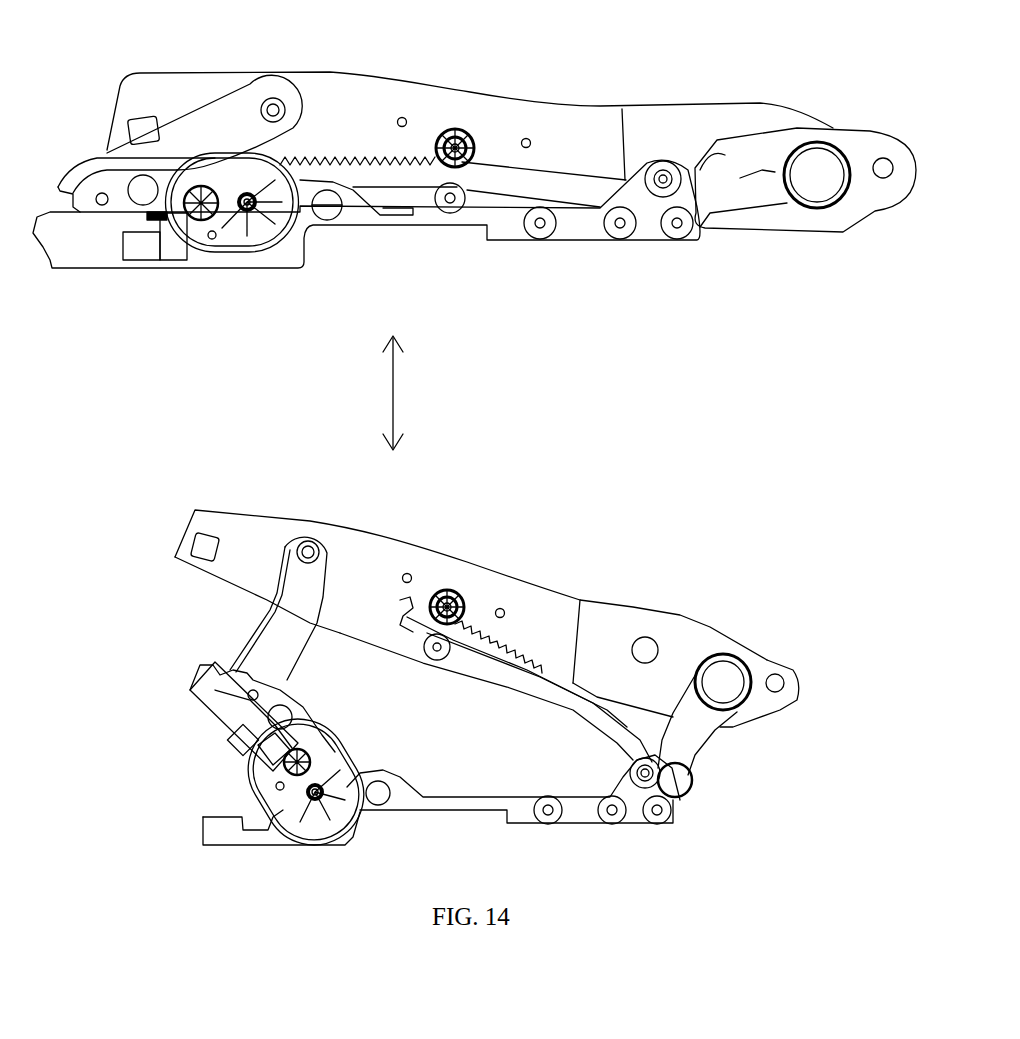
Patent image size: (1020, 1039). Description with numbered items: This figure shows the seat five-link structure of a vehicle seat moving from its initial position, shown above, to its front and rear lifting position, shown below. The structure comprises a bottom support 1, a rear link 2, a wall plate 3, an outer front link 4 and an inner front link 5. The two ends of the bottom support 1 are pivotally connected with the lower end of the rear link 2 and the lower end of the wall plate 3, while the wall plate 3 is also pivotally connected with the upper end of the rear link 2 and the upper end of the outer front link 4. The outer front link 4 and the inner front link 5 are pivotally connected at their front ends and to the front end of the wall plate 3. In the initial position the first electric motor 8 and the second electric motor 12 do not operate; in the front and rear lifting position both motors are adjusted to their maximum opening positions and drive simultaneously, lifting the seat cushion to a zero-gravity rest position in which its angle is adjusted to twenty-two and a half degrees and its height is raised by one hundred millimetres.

The bottom support 1 is at (338, 212).
The rear link 2 is at (748, 185).
The wall plate 3 is at (497, 98).
The outer front link 4 is at (237, 130).
The inner front link 5 is at (115, 185).
The first electric motor 8 is at (98, 230).
The second electric motor 12 is at (455, 148).